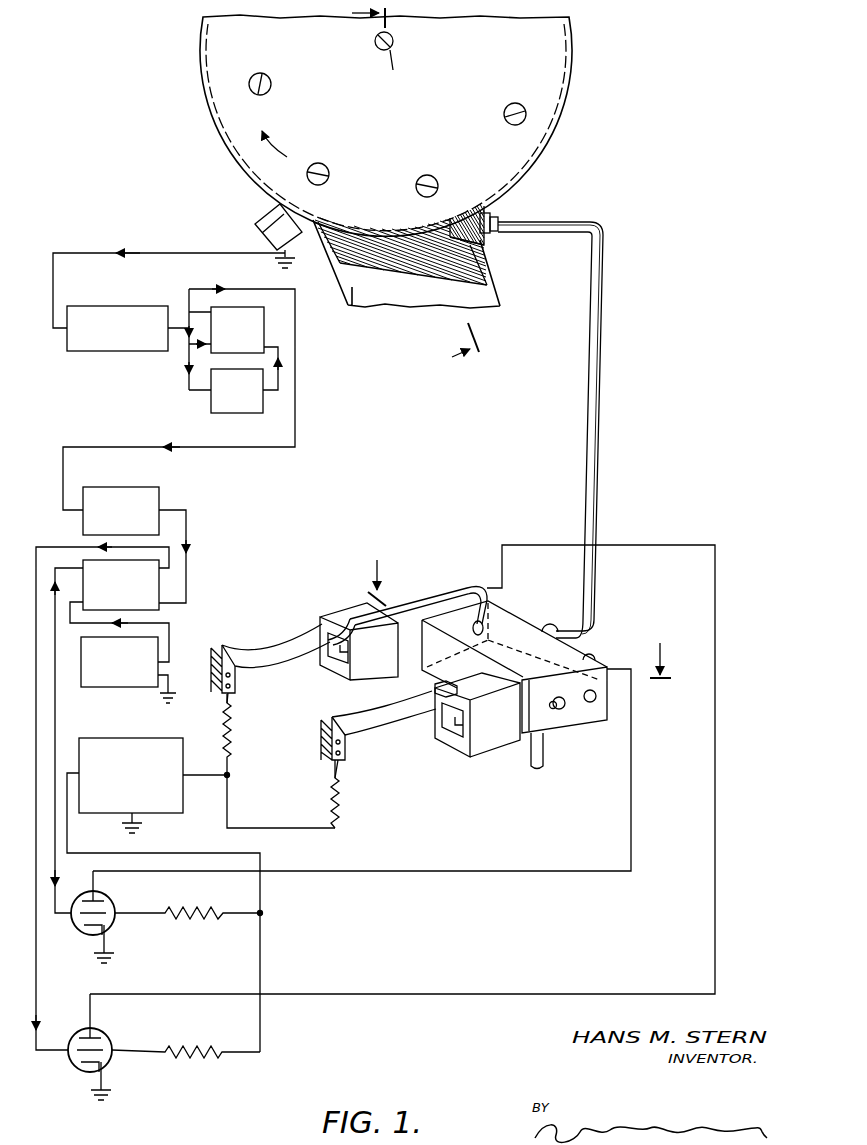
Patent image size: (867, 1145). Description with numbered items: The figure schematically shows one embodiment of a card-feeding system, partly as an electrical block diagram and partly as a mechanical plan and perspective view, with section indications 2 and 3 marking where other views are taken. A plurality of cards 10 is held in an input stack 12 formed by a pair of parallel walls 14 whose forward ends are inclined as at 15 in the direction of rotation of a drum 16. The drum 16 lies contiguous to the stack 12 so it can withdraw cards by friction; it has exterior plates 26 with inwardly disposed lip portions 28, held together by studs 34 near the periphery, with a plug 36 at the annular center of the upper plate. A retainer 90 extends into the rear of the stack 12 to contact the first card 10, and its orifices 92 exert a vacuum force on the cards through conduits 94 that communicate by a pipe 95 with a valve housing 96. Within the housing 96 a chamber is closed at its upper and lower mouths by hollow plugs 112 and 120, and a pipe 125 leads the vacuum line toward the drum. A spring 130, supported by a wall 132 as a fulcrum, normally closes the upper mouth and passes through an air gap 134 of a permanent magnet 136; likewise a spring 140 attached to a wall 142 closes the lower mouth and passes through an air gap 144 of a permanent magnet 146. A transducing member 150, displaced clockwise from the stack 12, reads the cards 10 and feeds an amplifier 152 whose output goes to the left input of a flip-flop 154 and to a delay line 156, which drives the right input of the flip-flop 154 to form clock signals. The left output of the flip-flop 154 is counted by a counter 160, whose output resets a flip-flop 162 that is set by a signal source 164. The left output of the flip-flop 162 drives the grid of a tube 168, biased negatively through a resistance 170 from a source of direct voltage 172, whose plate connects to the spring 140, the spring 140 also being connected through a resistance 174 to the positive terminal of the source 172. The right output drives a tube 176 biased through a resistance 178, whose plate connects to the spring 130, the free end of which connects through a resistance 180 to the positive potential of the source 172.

The section line 2- 2 is at (404, 187).
The section line 3- 3 is at (525, 615).
The cards 10 is at (368, 262).
The stack 12 is at (498, 281).
The walls 14 is at (347, 293).
The inclined portion 15 is at (327, 247).
The drum 16 is at (546, 148).
The exterior plates 26 is at (548, 48).
The lip portions 28 is at (563, 87).
The studs 34 is at (249, 84).
The plug 36 is at (378, 45).
The retainer 90 is at (488, 211).
The orifices 92 is at (448, 238).
The conduits 94 is at (456, 220).
The pipe 95 is at (603, 421).
The valve housing 96 is at (528, 620).
The hollow plug 112 is at (485, 621).
The hollow plug 120 is at (598, 699).
The pipe 125 is at (565, 710).
The spring 130 is at (284, 656).
The wall 132 is at (224, 644).
The air gap 134 is at (343, 636).
The permanent magnet 136 is at (346, 675).
The spring 140 is at (403, 720).
The wall 142 is at (328, 724).
The air gap 144 is at (436, 691).
The permanent magnet 146 is at (498, 742).
The transducing member 150 is at (258, 226).
The amplifier 152 is at (132, 285).
The flip-flop 154 is at (231, 308).
The delay line 156 is at (217, 413).
The counter 160 is at (118, 490).
The flip-flop 162 is at (160, 605).
The signal source 164 is at (120, 688).
The tube 168 is at (74, 923).
The resistance 170 is at (208, 920).
The source of direct voltage 172 is at (162, 813).
The resistance 174 is at (341, 808).
The tube 176 is at (72, 1058).
The resistance 178 is at (194, 1057).
The resistance 180 is at (230, 737).